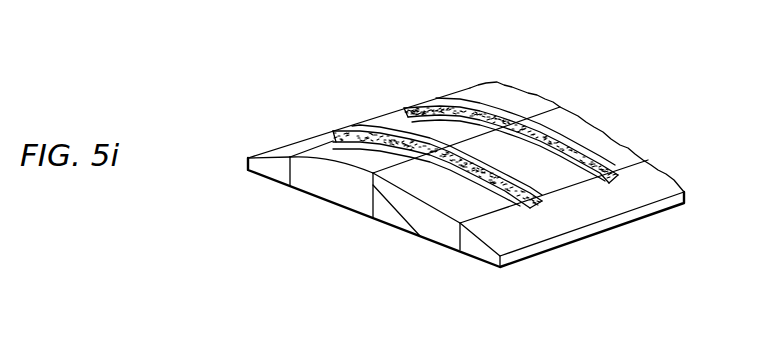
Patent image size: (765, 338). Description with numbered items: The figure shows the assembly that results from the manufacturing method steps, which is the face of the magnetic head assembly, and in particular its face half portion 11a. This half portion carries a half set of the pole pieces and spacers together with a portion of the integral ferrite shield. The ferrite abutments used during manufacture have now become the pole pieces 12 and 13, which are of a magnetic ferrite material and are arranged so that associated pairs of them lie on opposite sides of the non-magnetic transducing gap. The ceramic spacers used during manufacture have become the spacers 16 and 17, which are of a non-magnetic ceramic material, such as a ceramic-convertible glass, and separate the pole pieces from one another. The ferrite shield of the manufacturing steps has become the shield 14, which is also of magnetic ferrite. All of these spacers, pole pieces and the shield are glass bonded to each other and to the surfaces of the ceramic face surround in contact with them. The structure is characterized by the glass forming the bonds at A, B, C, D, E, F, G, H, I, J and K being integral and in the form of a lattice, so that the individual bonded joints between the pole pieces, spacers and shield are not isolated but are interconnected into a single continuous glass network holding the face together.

The face half portion 11a is at (288, 147).
The pole piece 12 is at (392, 112).
The pole piece 13 is at (550, 177).
The shield 14 is at (532, 190).
The spacer 16 is at (453, 103).
The spacer 17 is at (610, 163).
The glass bond A is at (272, 170).
The glass bond B is at (392, 220).
The glass bond C is at (447, 250).
The glass bond D is at (540, 210).
The glass bond E is at (603, 185).
The glass bond F is at (620, 182).
The glass bond G is at (608, 184).
The glass bond H is at (418, 106).
The glass bond I is at (352, 136).
The glass bond J is at (330, 136).
The glass bond K is at (337, 137).